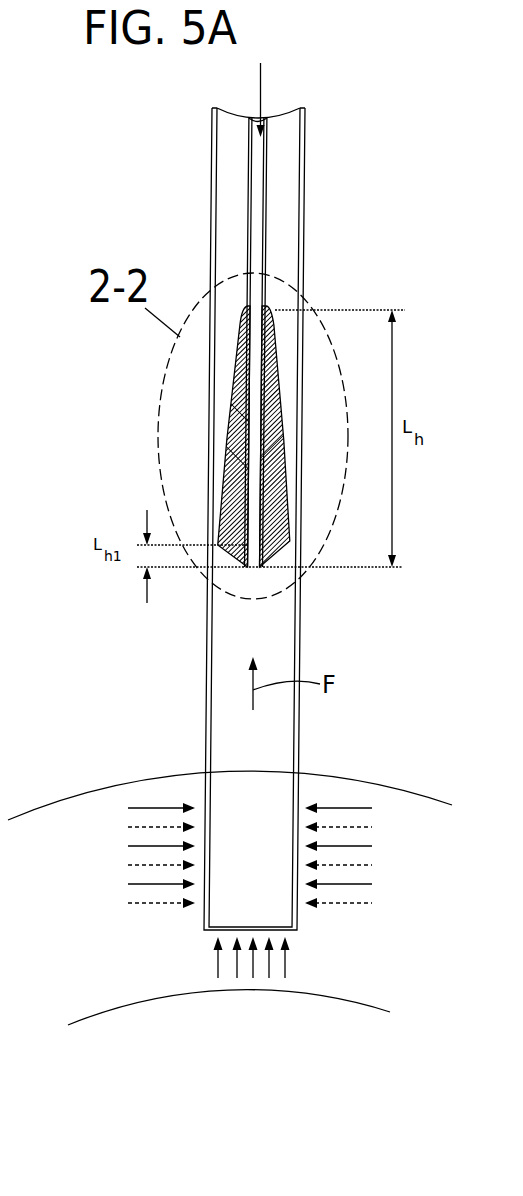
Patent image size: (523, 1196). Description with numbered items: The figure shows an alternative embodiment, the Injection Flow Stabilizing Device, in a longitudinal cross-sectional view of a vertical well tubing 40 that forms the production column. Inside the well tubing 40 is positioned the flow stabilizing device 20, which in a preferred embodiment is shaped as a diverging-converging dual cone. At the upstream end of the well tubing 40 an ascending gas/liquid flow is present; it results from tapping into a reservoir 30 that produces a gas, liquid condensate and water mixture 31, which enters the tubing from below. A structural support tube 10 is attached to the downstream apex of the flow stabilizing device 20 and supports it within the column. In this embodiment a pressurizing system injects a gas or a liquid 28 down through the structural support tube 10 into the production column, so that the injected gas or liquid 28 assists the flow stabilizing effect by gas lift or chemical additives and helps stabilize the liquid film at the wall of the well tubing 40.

The structural support tube 10 is at (268, 160).
The flow stabilizing device 20 is at (218, 409).
The injected gas or liquid 28 is at (262, 88).
The reservoir 30 is at (84, 912).
The gas, liquid condensate and water mixture 31 is at (367, 863).
The well tubing 40 is at (305, 214).